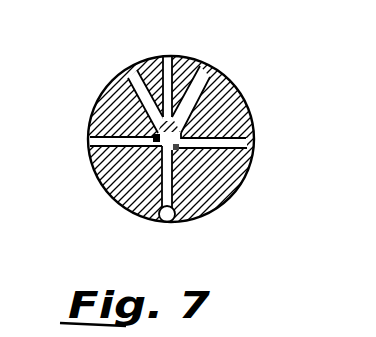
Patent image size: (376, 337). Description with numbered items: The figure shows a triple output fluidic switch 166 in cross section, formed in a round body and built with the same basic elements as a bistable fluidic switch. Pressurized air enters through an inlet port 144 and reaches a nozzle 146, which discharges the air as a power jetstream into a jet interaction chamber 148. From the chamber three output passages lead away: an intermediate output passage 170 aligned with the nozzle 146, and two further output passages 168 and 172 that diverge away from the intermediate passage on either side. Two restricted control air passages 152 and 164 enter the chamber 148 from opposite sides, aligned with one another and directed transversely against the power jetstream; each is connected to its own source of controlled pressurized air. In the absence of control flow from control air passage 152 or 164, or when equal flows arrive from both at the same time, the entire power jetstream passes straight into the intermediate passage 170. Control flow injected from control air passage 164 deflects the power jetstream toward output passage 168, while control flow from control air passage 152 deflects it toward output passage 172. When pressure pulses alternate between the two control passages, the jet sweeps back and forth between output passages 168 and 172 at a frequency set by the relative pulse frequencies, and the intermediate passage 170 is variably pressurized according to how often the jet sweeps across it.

The inlet port 144 is at (173, 224).
The nozzle 146 is at (177, 148).
The jet interaction chamber 148 is at (158, 136).
The control air passage 152 is at (103, 141).
The control air passage 164 is at (242, 142).
The triple output fluidic switch 166 is at (254, 97).
The output passage 168 is at (132, 64).
The intermediate output passage 170 is at (174, 56).
The output passage 172 is at (208, 63).